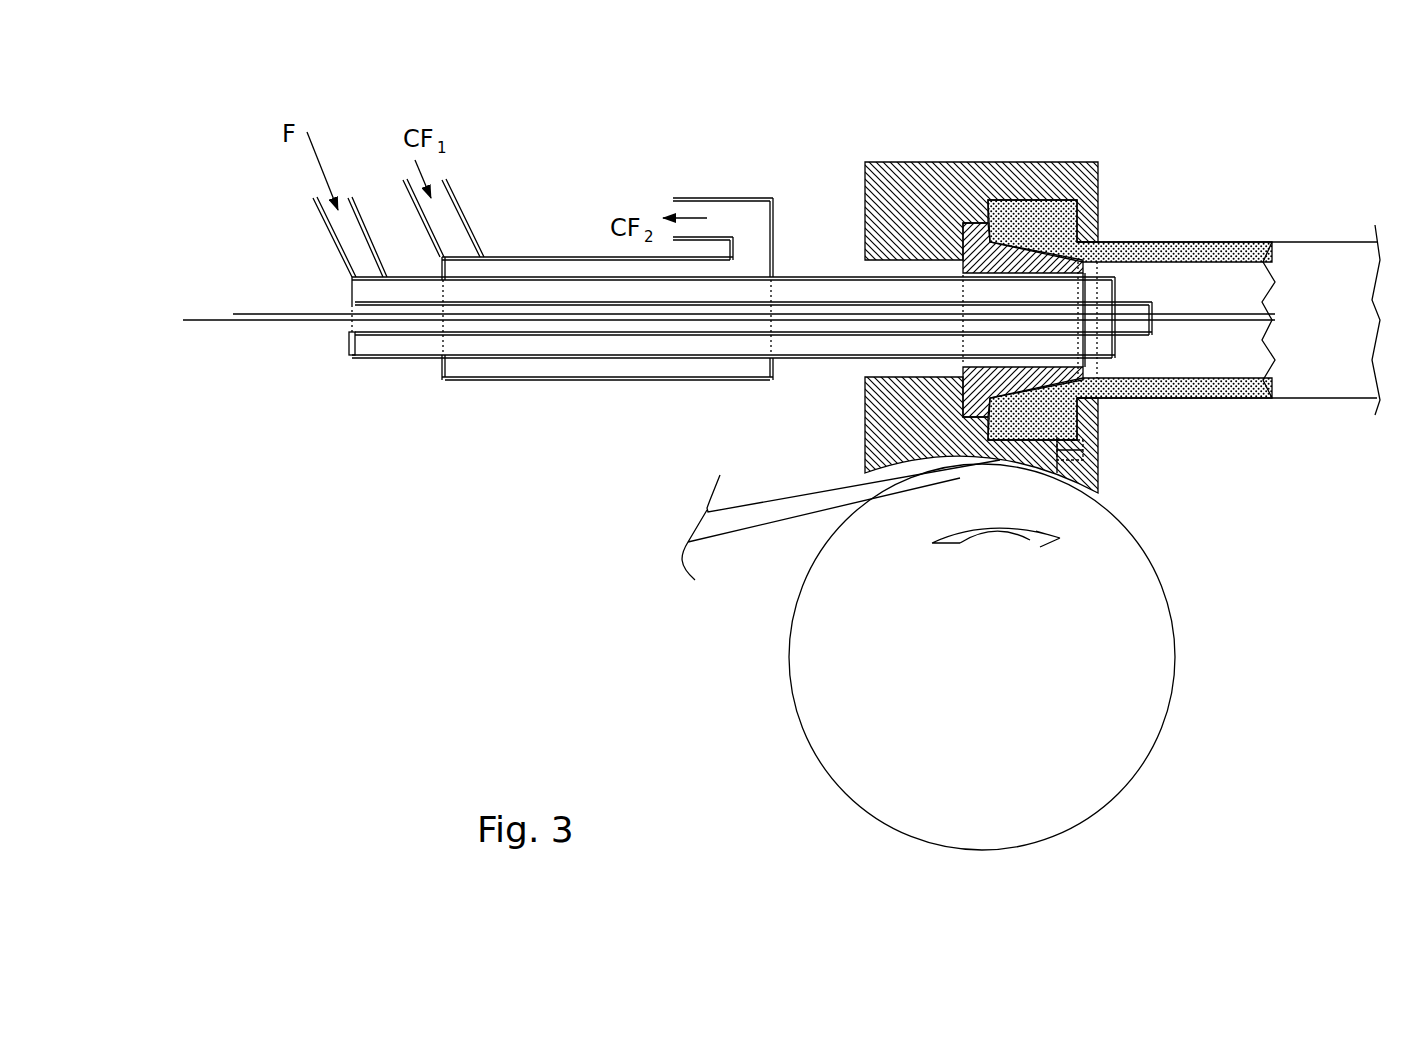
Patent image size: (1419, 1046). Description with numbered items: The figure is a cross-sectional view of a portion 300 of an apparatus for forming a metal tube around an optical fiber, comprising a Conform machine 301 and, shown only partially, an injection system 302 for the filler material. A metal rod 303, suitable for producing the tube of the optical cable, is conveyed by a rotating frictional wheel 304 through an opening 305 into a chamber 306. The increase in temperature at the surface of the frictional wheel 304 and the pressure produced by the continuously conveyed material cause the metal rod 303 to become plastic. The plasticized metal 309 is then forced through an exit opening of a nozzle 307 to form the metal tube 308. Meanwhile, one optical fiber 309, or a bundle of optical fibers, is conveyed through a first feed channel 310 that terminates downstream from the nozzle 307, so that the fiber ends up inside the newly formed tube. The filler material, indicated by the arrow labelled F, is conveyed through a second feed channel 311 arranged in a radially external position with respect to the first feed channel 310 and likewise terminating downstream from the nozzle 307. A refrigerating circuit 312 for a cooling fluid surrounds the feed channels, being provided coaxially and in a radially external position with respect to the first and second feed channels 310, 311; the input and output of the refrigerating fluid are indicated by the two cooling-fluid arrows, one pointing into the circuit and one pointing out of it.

The portion of an apparatus 300 is at (433, 681).
The Conform machine 301 is at (880, 125).
The injection system 302 is at (690, 417).
The metal rod 303 is at (797, 503).
The rotating frictional wheel 304 is at (823, 677).
The opening 305 is at (1090, 462).
The chamber 306 is at (928, 195).
The nozzle 307 is at (1016, 232).
The metal tube 308 is at (1213, 242).
The optical fiber 309 is at (387, 322).
The first feed channel 310 is at (480, 325).
The second feed channel 311 is at (463, 290).
The refrigerating circuit 312 is at (550, 375).